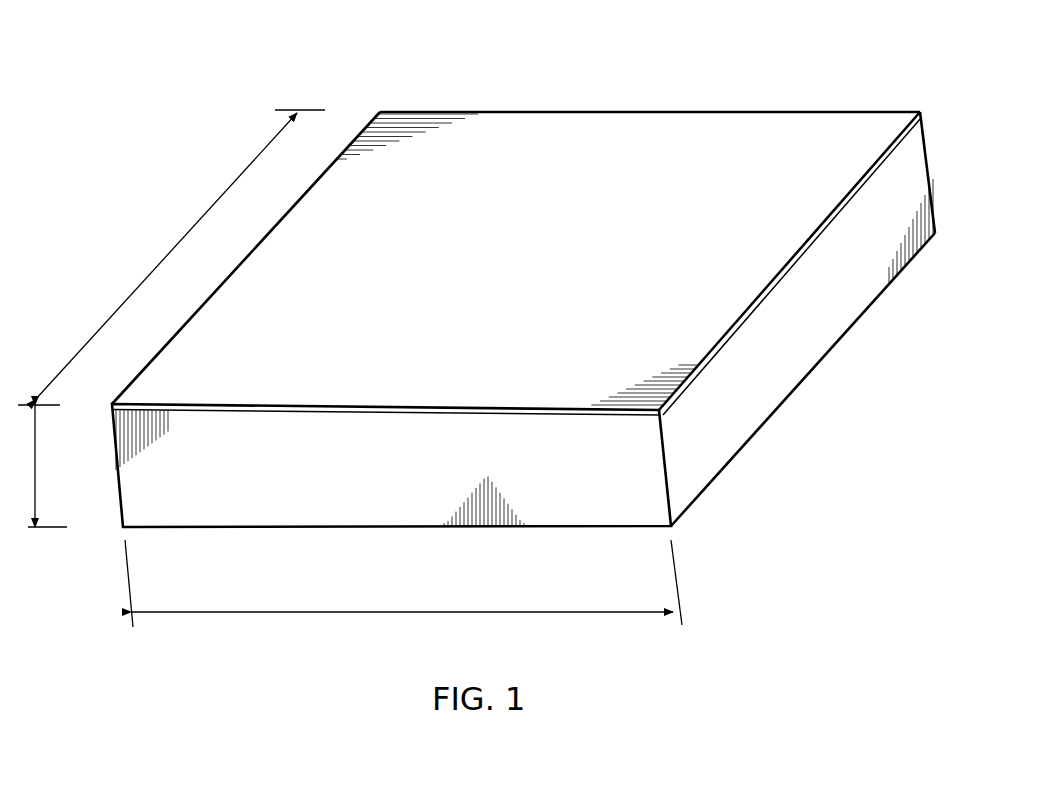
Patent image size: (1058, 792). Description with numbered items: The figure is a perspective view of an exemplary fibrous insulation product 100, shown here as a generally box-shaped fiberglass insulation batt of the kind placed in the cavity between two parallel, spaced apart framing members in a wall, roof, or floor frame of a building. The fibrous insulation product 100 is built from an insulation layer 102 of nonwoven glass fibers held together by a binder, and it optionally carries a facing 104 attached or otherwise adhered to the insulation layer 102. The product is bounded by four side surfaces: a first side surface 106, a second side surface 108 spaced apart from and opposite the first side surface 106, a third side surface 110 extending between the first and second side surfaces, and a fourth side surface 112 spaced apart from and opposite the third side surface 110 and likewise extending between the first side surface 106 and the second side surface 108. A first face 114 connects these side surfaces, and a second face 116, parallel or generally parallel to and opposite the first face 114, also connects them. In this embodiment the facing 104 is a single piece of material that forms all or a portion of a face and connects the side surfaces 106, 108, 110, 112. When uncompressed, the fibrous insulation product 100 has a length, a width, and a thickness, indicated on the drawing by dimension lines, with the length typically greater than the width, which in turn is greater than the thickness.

The fibrous insulation product 100 is at (151, 64).
The insulation layer 102 is at (623, 430).
The facing 104 is at (683, 380).
The first side surface 106 is at (610, 440).
The second side surface 108 is at (748, 110).
The third side surface 110 is at (807, 338).
The fourth side surface 112 is at (175, 333).
The first face 114 is at (515, 267).
The second face 116 is at (718, 473).